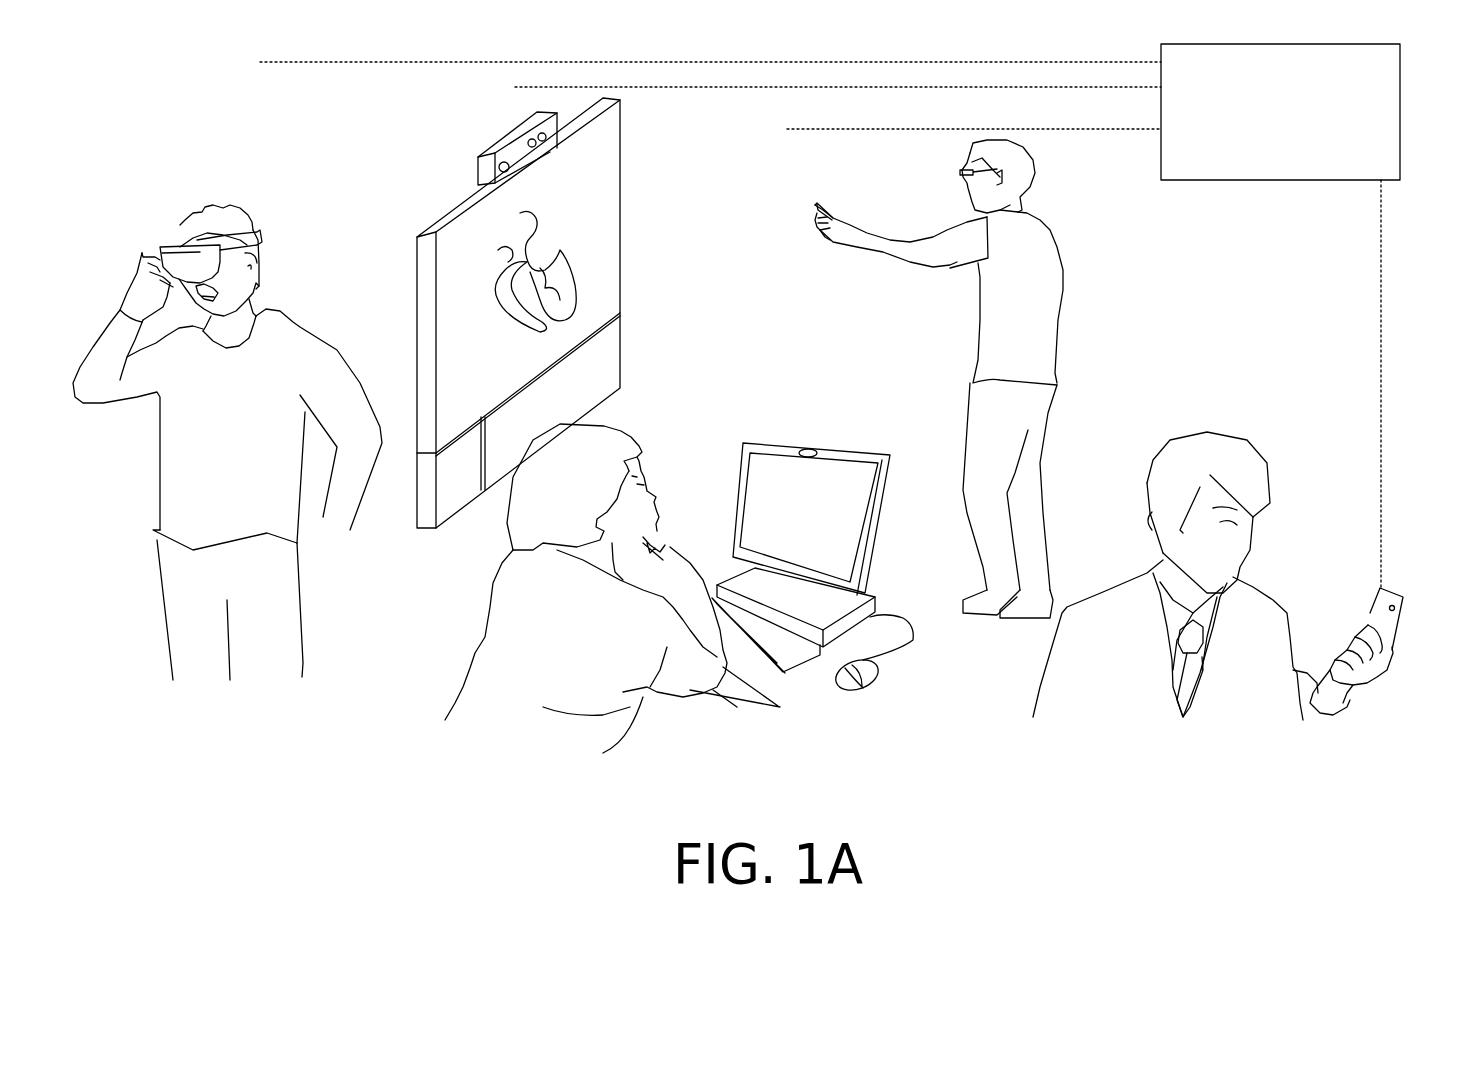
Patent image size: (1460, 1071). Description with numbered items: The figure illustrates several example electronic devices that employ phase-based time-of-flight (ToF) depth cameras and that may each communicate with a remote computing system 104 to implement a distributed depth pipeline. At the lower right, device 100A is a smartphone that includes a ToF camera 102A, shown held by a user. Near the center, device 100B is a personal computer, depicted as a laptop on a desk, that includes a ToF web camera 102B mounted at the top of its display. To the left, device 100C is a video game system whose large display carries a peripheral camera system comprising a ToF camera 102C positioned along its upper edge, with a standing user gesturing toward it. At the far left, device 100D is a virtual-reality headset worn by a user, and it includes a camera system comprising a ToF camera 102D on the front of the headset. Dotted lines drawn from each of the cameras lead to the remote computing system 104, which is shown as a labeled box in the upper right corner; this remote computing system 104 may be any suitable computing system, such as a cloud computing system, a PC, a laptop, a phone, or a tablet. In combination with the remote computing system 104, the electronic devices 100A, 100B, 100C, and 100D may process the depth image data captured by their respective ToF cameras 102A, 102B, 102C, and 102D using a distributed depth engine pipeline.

The smartphone 100A is at (1363, 608).
The ToF camera 102A is at (1395, 608).
The personal computer 100B is at (882, 523).
The ToF web camera 102B is at (808, 448).
The video game system 100C is at (697, 129).
The ToF camera 102C is at (478, 172).
The virtual-reality headset 100D is at (263, 230).
The ToF camera 102D is at (162, 243).
The remote computing system 104 is at (1263, 162).